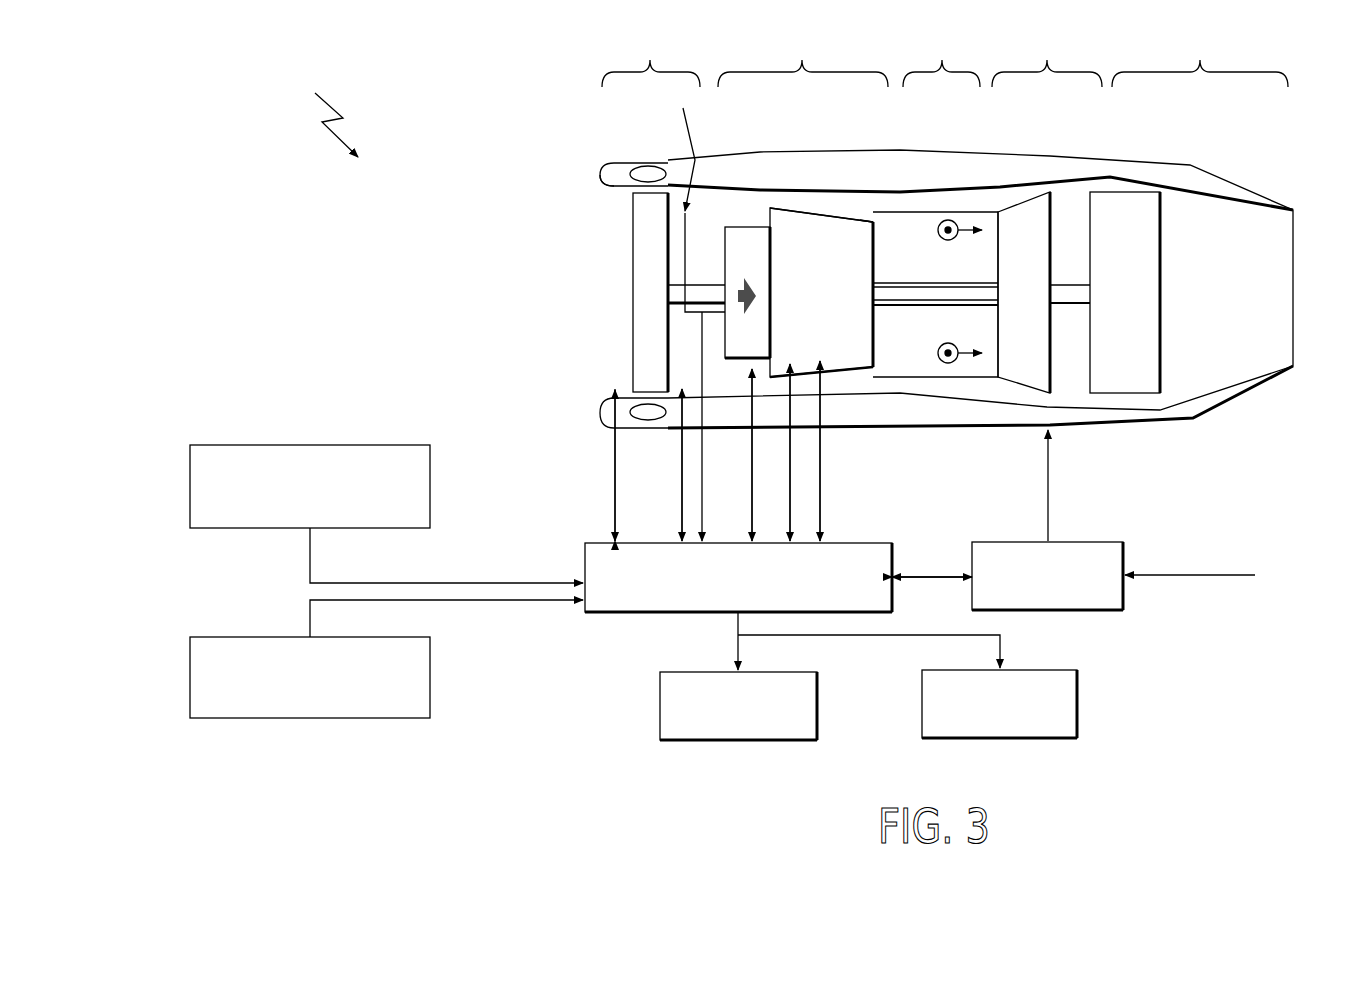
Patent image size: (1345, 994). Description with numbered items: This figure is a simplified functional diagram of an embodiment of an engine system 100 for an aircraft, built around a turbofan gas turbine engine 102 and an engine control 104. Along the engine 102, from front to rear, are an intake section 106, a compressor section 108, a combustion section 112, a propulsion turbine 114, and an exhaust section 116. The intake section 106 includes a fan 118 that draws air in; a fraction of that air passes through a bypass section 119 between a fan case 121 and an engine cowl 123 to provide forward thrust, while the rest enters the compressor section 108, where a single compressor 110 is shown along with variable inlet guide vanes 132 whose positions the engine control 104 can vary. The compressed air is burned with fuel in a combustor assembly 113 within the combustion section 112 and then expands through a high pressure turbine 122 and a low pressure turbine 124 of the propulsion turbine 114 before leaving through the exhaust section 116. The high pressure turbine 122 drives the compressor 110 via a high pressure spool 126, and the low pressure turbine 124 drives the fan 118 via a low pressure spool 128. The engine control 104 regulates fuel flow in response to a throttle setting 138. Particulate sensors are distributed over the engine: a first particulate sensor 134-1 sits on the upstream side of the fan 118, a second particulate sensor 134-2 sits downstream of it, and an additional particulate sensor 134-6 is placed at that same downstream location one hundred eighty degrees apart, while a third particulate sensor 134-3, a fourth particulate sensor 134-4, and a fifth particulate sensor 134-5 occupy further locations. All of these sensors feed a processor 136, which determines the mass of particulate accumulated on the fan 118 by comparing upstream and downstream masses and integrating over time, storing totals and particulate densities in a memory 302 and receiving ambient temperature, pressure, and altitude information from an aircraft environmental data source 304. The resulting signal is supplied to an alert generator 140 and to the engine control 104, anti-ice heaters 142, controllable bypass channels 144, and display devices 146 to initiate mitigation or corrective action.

The engine system 100 is at (325, 112).
The turbofan gas turbine engine 102 is at (1137, 167).
The engine control 104 is at (1125, 543).
The intake section 106 is at (651, 58).
The compressor section 108 is at (803, 58).
The compressor 110 is at (798, 274).
The combustion section 112 is at (941, 58).
The combustor assembly 113 is at (950, 218).
The propulsion turbine 114 is at (1047, 58).
The exhaust section 116 is at (1200, 58).
The fan 118 is at (633, 250).
The bypass section 119 is at (867, 207).
The fan case 121 is at (603, 176).
The high pressure turbine 122 is at (1040, 303).
The engine cowl 123 is at (927, 210).
The low pressure turbine 124 is at (1143, 303).
The high pressure spool 126 is at (942, 306).
The low pressure spool 128 is at (703, 284).
The variable inlet guide vanes 132 is at (748, 225).
The first particulate sensor 134-1 is at (612, 388).
The second particulate sensor 134-2 is at (680, 390).
The third particulate sensor 134-3 is at (750, 368).
The fourth particulate sensor 134-4 is at (790, 362).
The fifth particulate sensor 134-5 is at (822, 363).
The particulate sensor 134-6 is at (686, 313).
The processor 136 is at (582, 578).
The throttle setting 138 is at (1222, 576).
The alert generator 140 is at (660, 707).
The anti-ice heaters 142 is at (648, 166).
The controllable bypass channels 144 is at (795, 214).
The display devices 146 is at (1078, 705).
The memory 302 is at (188, 650).
The aircraft environmental data source 304 is at (188, 483).